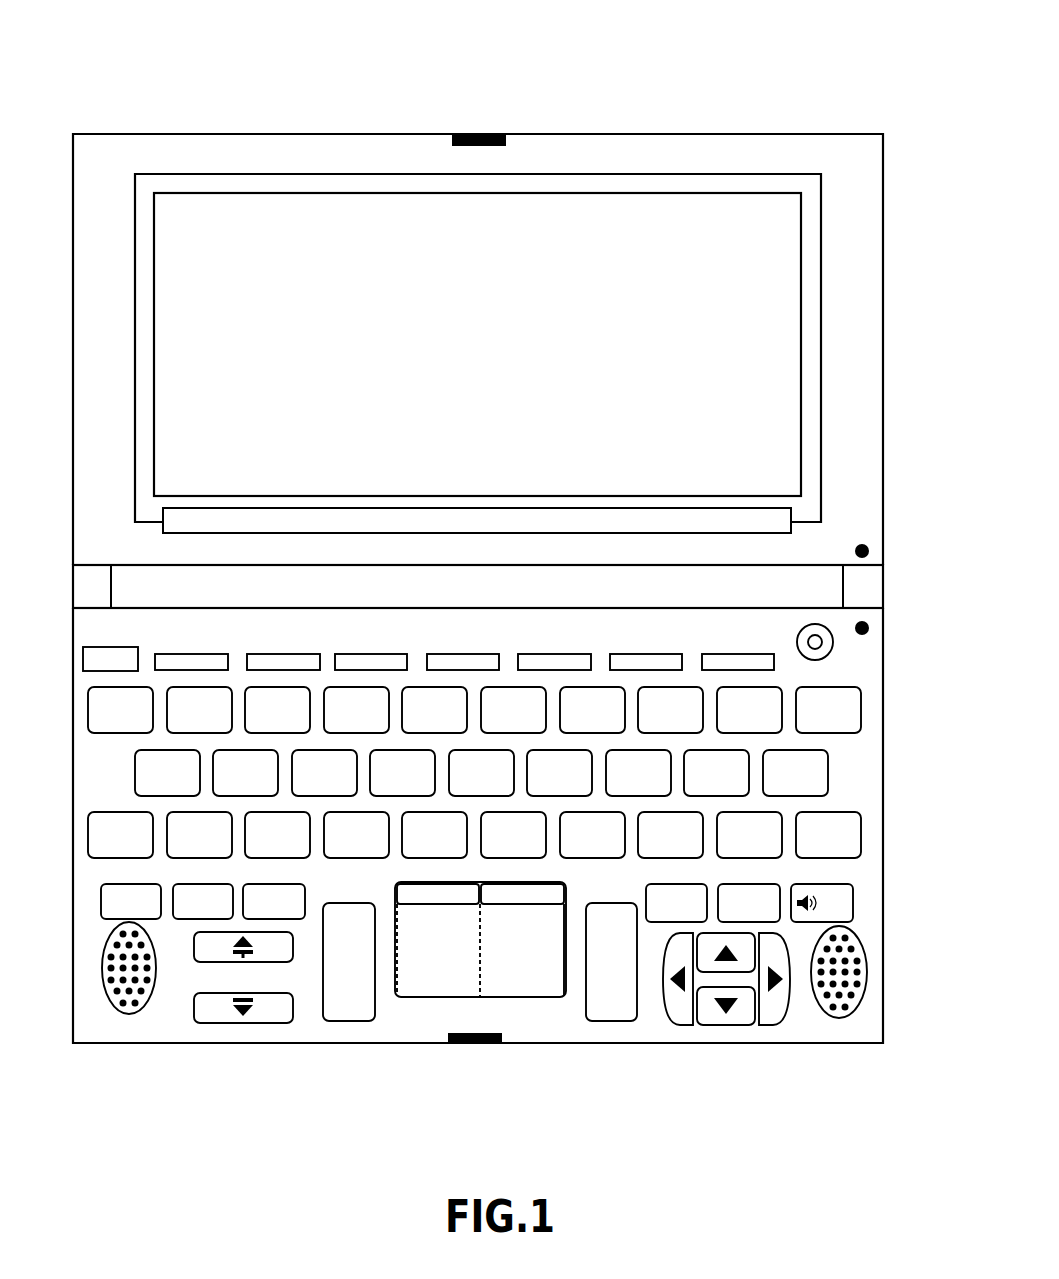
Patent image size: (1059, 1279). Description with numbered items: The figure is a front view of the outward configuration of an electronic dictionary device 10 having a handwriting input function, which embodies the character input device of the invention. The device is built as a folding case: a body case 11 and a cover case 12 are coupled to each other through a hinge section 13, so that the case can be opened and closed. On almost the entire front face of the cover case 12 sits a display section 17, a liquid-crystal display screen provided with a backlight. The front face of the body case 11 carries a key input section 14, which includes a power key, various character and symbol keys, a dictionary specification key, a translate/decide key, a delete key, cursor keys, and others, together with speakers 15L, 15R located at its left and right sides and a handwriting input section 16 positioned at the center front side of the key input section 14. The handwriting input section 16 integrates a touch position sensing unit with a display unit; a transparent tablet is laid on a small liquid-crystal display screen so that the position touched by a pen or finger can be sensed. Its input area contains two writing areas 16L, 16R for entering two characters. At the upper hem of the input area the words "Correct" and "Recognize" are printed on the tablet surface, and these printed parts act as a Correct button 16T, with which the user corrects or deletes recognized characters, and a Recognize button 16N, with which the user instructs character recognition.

The electronic dictionary device 10 is at (631, 98).
The body case 11 is at (358, 1052).
The cover case 12 is at (355, 128).
The hinge section 13 is at (828, 586).
The key input section 14 is at (885, 647).
The speaker 15L is at (128, 1013).
The speaker 15R is at (839, 1017).
The handwriting input section 16 is at (538, 1108).
The writing area 16L is at (448, 983).
The writing area 16R is at (503, 983).
The Correct button 16T is at (396, 892).
The Recognize button 16N is at (565, 892).
The display section 17 is at (783, 374).